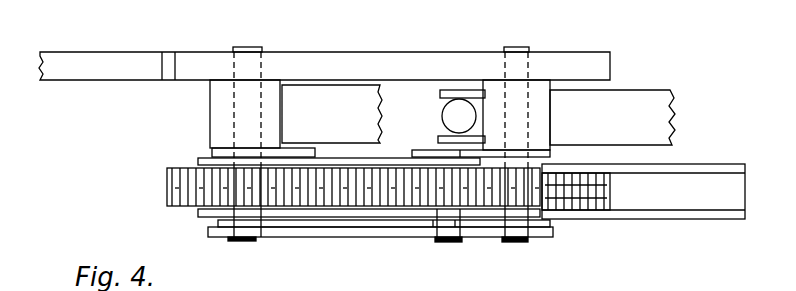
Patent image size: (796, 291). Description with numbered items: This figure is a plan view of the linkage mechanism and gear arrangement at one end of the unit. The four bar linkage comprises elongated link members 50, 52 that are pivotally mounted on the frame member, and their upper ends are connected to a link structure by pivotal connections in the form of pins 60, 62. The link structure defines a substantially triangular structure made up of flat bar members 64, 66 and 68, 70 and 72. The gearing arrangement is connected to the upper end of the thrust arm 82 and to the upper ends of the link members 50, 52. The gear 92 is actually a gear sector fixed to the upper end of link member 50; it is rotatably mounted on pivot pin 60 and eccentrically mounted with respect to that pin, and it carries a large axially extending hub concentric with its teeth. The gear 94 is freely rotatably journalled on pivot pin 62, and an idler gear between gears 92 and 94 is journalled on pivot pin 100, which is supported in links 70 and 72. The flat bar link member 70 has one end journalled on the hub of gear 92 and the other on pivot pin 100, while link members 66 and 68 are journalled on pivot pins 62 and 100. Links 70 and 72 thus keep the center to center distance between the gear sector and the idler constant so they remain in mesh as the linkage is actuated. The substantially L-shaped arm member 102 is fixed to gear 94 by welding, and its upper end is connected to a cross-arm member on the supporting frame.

The link member 50 is at (332, 125).
The link member 52 is at (657, 92).
The pin 60 is at (243, 47).
The pin 62 is at (512, 47).
The flat bar member 64 is at (390, 237).
The flat bar member 66 is at (556, 228).
The flat bar member 68 is at (565, 150).
The flat bar link member 70 is at (205, 213).
The link member 72 is at (200, 158).
The thrust arm 82 is at (357, 52).
The gear 92 is at (166, 181).
The gear 94 is at (610, 192).
The pivot pin 100 is at (447, 241).
The arm member 102 is at (722, 219).